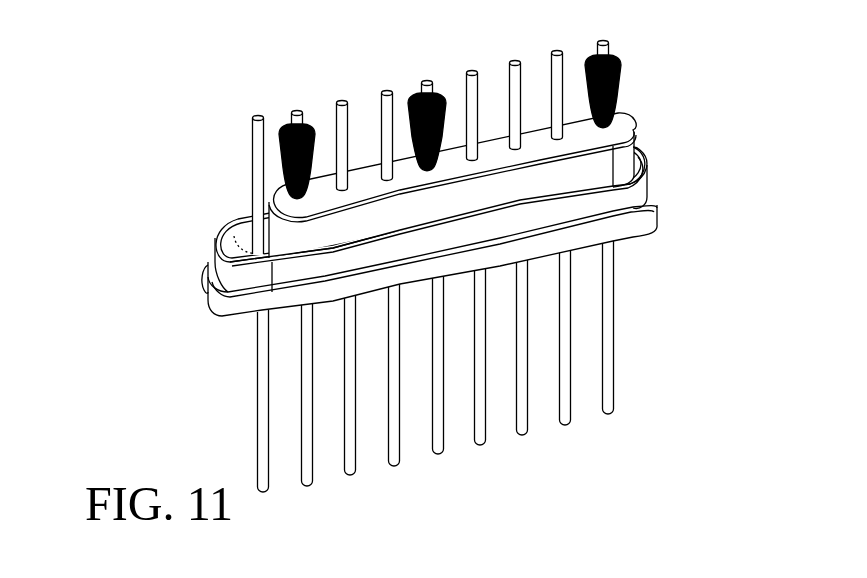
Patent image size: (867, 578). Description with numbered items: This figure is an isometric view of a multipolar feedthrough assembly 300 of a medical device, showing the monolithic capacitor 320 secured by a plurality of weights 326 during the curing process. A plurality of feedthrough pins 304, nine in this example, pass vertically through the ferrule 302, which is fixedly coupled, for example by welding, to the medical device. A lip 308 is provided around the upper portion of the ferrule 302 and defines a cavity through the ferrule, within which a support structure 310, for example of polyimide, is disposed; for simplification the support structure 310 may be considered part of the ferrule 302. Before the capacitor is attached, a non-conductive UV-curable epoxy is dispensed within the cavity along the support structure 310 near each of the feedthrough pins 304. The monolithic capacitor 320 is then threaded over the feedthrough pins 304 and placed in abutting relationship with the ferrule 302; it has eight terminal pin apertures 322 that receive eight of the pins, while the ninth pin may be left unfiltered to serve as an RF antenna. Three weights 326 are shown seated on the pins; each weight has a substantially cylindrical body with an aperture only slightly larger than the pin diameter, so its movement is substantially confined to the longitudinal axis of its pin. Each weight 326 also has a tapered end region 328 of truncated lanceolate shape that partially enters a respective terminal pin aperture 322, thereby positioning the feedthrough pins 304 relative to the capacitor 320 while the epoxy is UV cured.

The multipolar feedthrough assembly 300 is at (387, 282).
The ferrule 302 is at (647, 222).
The feedthrough pins 304 is at (608, 416).
The lip 308 is at (438, 204).
The support structure 310 is at (232, 240).
The monolithic capacitor 320 is at (487, 178).
The terminal pin apertures 322 is at (628, 124).
The weights 326 is at (314, 132).
The tapered end region 328 is at (308, 190).